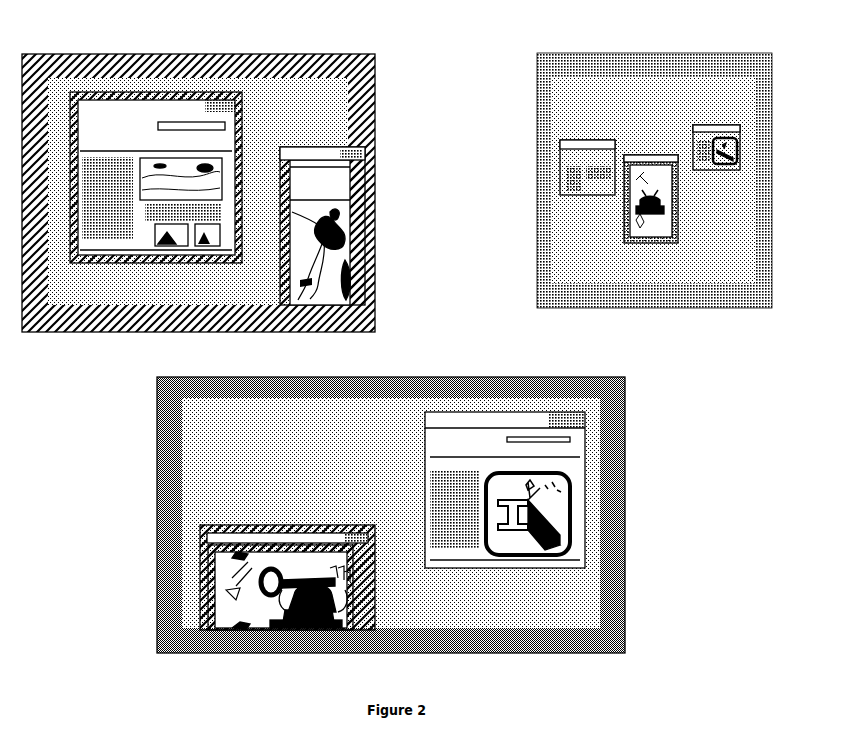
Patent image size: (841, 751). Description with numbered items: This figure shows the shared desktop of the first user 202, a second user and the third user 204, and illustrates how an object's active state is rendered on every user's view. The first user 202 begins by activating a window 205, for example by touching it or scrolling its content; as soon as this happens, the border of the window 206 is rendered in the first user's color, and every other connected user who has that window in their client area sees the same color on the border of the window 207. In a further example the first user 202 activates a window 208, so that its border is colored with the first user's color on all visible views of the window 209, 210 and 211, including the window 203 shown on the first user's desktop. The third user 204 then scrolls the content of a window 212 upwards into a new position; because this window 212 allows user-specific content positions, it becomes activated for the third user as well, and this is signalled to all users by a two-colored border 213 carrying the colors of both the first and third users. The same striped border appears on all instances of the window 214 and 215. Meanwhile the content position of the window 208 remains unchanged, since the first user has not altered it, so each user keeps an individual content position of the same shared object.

The first user 202 is at (135, 334).
The social network window 203 is at (361, 173).
The third user 204 is at (391, 525).
The window 205 is at (155, 127).
The border of the window 206 is at (160, 140).
The border of the window 207 is at (585, 140).
The window 208 is at (654, 180).
The visible view of the window 209 is at (340, 232).
The visible view of the window 210 is at (691, 140).
The visible view of the window 211 is at (287, 534).
The window 212 is at (312, 546).
The two-colored border 213 is at (272, 528).
The instance of the window 214 is at (356, 146).
The instance of the window 215 is at (678, 216).